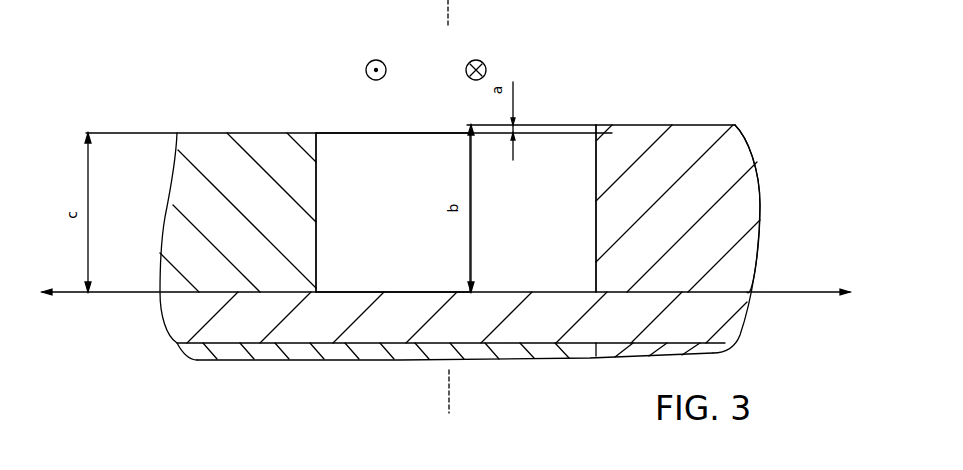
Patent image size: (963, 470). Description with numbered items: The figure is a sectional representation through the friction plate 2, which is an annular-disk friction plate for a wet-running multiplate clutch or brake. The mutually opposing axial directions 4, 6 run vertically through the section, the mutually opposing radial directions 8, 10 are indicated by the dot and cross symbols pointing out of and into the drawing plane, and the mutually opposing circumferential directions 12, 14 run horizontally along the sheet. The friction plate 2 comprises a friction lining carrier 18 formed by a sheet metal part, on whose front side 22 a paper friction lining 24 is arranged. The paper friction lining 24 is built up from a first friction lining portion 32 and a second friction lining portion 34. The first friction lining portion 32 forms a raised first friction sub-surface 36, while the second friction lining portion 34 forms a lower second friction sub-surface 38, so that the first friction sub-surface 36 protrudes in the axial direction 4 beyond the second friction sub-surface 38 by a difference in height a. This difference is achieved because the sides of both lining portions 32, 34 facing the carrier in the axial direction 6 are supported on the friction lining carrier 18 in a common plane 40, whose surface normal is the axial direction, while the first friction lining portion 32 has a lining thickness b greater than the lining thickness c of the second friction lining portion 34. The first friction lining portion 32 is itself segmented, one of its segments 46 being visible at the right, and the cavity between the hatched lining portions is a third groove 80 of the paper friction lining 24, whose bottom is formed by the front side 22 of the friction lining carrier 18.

The friction plate 2 is at (832, 164).
The axial direction 4 is at (450, 13).
The axial direction 6 is at (452, 387).
The radial direction 8 is at (370, 61).
The radial direction 10 is at (483, 60).
The circumferential direction 12 is at (822, 293).
The circumferential direction 14 is at (70, 293).
The friction lining carrier 18 is at (713, 317).
The front side 22 is at (577, 291).
The paper friction lining 24 is at (740, 142).
The first friction lining portion 32 is at (727, 190).
The second friction lining portion 34 is at (165, 218).
The first friction sub-surface 36 is at (643, 125).
The second friction sub-surface 38 is at (222, 133).
The common plane 40 is at (786, 291).
The segment 46 is at (737, 212).
The third groove 80 is at (357, 178).